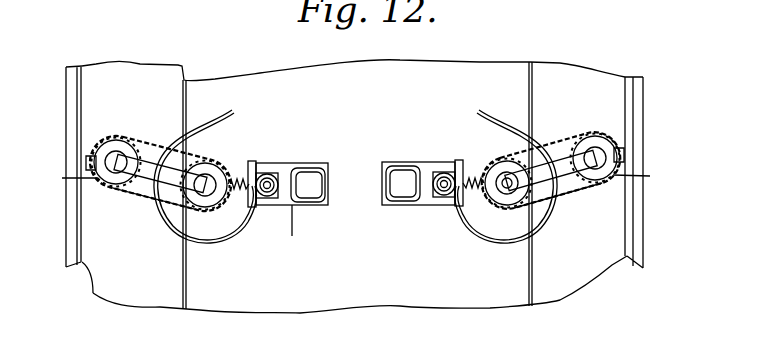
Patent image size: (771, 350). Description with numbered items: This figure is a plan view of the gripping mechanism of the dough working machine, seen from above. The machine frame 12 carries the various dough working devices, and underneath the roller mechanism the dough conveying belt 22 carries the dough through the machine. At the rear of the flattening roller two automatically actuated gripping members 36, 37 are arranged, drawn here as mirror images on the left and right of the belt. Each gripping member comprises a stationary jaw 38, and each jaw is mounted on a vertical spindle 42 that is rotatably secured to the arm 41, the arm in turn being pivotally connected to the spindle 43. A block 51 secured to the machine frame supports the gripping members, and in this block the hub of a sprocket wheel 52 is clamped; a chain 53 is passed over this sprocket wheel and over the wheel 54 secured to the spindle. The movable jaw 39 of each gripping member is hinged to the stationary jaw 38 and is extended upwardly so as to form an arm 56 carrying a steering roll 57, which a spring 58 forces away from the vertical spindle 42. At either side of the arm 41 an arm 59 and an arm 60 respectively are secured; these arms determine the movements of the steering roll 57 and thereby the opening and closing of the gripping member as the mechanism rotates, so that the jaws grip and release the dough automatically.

The frame 12 is at (88, 278).
The dough conveying belt 22 is at (266, 303).
The gripping member 36 is at (290, 235).
The gripping member 37 is at (510, 240).
The stationary jaw 38 is at (385, 200).
The movable jaw 39 is at (300, 171).
The arm 41 is at (168, 205).
The vertical spindle 42 is at (209, 182).
The spindle 43 is at (117, 157).
The block 51 is at (86, 151).
The sprocket wheel 52 is at (125, 193).
The chain 53 is at (148, 151).
The wheel 54 is at (205, 176).
The arm 56 is at (262, 197).
The steering roll 57 is at (270, 177).
The spring 58 is at (252, 172).
The arm 59 is at (498, 104).
The arm 60 is at (206, 244).